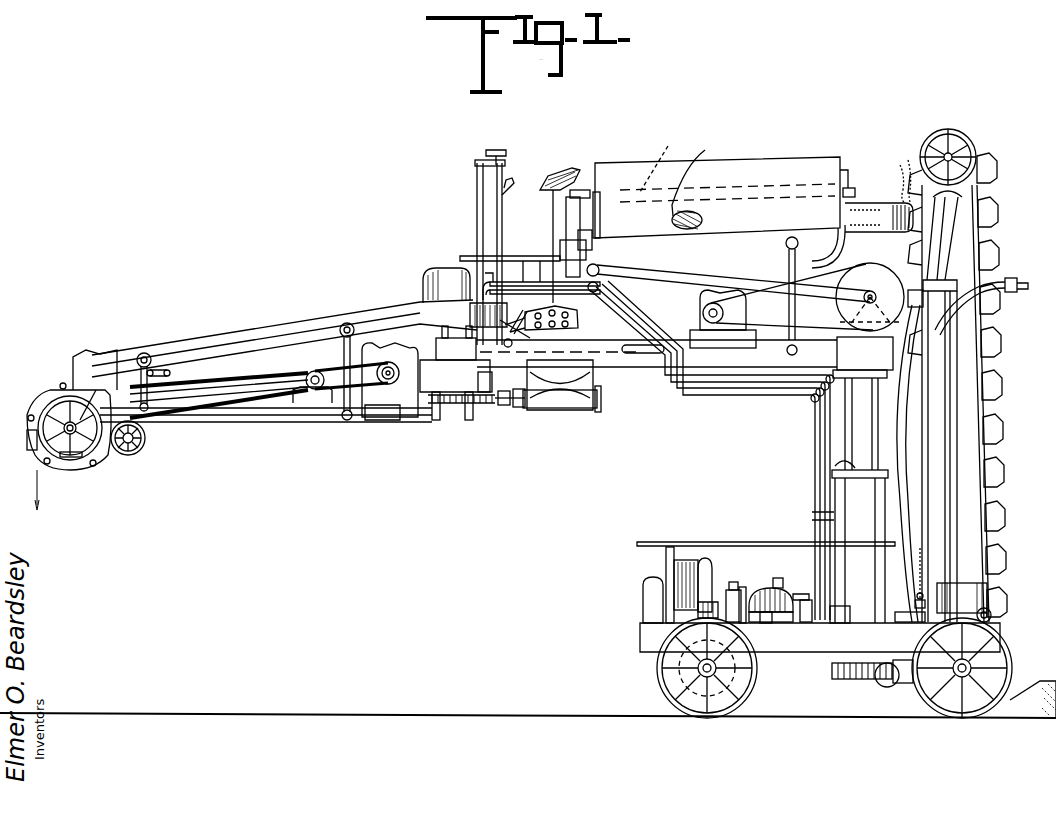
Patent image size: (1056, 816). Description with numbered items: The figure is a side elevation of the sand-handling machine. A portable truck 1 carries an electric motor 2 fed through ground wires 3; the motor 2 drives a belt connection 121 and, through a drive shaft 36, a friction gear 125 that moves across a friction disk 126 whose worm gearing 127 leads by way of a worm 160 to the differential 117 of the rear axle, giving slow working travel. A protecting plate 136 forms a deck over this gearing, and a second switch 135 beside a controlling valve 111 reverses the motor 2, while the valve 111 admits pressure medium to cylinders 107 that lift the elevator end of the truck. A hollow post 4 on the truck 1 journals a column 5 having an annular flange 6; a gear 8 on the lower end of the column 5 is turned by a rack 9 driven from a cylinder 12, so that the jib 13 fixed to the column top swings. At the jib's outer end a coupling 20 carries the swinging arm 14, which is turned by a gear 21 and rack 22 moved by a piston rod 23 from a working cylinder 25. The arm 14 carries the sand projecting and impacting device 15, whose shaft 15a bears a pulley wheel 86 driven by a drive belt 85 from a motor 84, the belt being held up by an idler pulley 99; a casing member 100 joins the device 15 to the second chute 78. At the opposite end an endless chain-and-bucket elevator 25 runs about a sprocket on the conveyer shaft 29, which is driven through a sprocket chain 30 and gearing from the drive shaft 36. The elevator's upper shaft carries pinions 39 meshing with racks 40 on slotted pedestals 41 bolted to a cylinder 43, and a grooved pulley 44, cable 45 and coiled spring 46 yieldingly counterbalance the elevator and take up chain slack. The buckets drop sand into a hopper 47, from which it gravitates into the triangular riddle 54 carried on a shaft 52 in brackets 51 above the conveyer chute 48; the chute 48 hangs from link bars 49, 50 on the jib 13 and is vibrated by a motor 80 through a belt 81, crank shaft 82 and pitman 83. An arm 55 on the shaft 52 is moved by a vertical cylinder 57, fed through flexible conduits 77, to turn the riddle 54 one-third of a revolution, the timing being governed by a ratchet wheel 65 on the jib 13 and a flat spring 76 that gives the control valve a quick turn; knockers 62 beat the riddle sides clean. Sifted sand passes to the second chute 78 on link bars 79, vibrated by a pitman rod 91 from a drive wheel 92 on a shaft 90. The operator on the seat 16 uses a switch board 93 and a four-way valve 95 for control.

The portable truck 1 is at (815, 652).
The motor 2 is at (707, 575).
The ground wire connections 3 is at (1008, 281).
The hollow post 4 is at (845, 497).
The column 5 is at (845, 400).
The annular flange 6 is at (833, 452).
The gear 8 is at (855, 680).
The rack 9 is at (900, 683).
The cylinder 12 is at (878, 687).
The jib 13 is at (612, 358).
The swinging arm 14 is at (296, 422).
The sand projecting and impacting device 15 is at (45, 405).
The shaft 15a is at (70, 457).
The seat 16 is at (562, 167).
The coupling 20 is at (491, 383).
The gear 21 is at (437, 412).
The rack 22 is at (490, 407).
The piston rod 23 is at (514, 405).
The working cylinder 25 is at (566, 400).
The conveyer shaft 29 is at (1012, 690).
The sprocket chain 30 is at (992, 616).
The drive shaft 36 is at (836, 623).
The pinions 39 is at (972, 139).
The racks 40 is at (930, 150).
The pedestals 41 is at (948, 244).
The cylinder 43 is at (888, 344).
The grooved pulley 44 is at (980, 150).
The cable 45 is at (925, 432).
The coiled spring 46 is at (918, 585).
The hopper 47 is at (873, 215).
The conveyer chute 48 is at (850, 249).
The link bar 49 is at (786, 258).
The link bar 50 is at (503, 322).
The brackets 51 is at (598, 205).
The shaft 52 is at (786, 165).
The riddle 54 is at (705, 150).
The arm 55 is at (565, 207).
The vertical cylinder 57 is at (600, 240).
The knockers 62 is at (658, 158).
The ratchet wheel 65 is at (555, 330).
The flat spring 76 is at (575, 316).
The flexible conduits 77 is at (590, 262).
The second chute 78 is at (322, 335).
The link bars 79 is at (146, 352).
The motor 80 is at (700, 300).
The belt 81 is at (762, 324).
The crank shaft 82 is at (876, 282).
The pitman 83 is at (694, 283).
The motor 84 is at (400, 350).
The drive belt 85 is at (377, 420).
The pulley wheel 86 is at (94, 370).
The shaft 90 is at (262, 345).
The pitman rod 91 is at (208, 372).
The drive wheel 92 is at (303, 396).
The switch board 93 is at (505, 186).
The four-way valve 95 is at (487, 160).
The idler pulley 99 is at (147, 441).
The casing member 100 is at (84, 354).
The cylinders 107 is at (987, 598).
The controlling valve 111 is at (914, 603).
The differential 117 is at (661, 684).
The belt connection 121 is at (645, 603).
The friction gear 125 is at (780, 623).
The friction disk 126 is at (766, 590).
The worm gearing 127 is at (782, 578).
The second switch 135 is at (908, 623).
The protecting plate 136 is at (690, 542).
The worm 160 is at (710, 602).